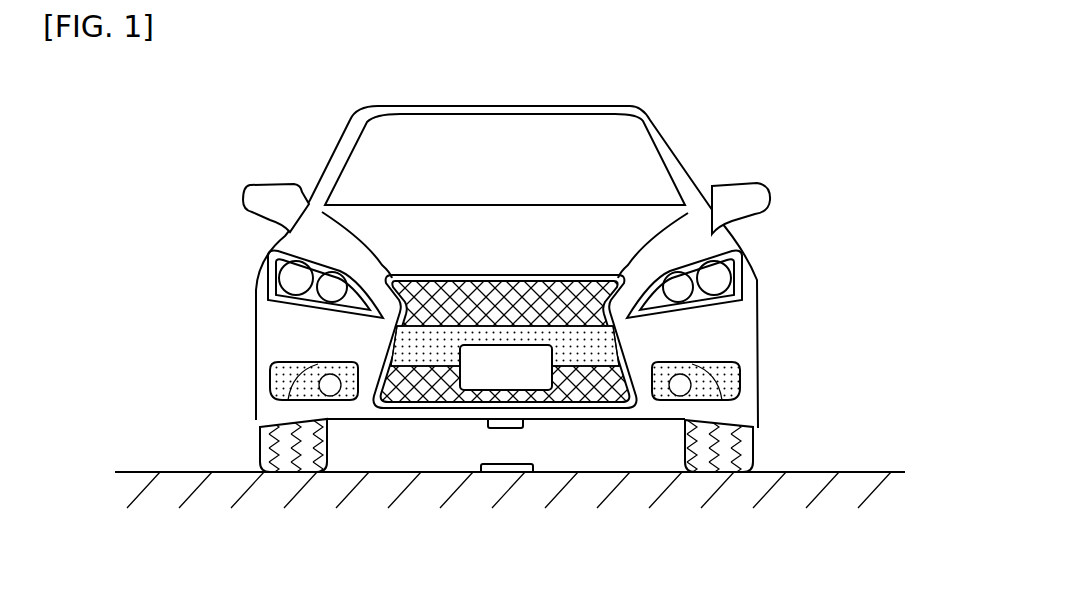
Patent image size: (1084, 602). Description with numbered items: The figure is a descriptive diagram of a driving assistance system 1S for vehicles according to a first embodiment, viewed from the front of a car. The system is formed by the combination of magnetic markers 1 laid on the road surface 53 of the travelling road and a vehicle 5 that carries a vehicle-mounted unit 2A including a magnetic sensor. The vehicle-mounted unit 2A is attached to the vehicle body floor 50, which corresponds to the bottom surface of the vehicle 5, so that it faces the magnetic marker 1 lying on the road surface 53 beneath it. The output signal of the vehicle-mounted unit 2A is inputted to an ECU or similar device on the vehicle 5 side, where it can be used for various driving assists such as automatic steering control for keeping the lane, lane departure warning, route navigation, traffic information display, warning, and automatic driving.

The driving assistance system 1S is at (818, 157).
The vehicle 5 is at (342, 152).
The vehicle body floor 50 is at (587, 420).
The vehicle-mounted unit 2A is at (507, 428).
The magnetic marker 1 is at (510, 465).
The road surface 53 is at (175, 472).